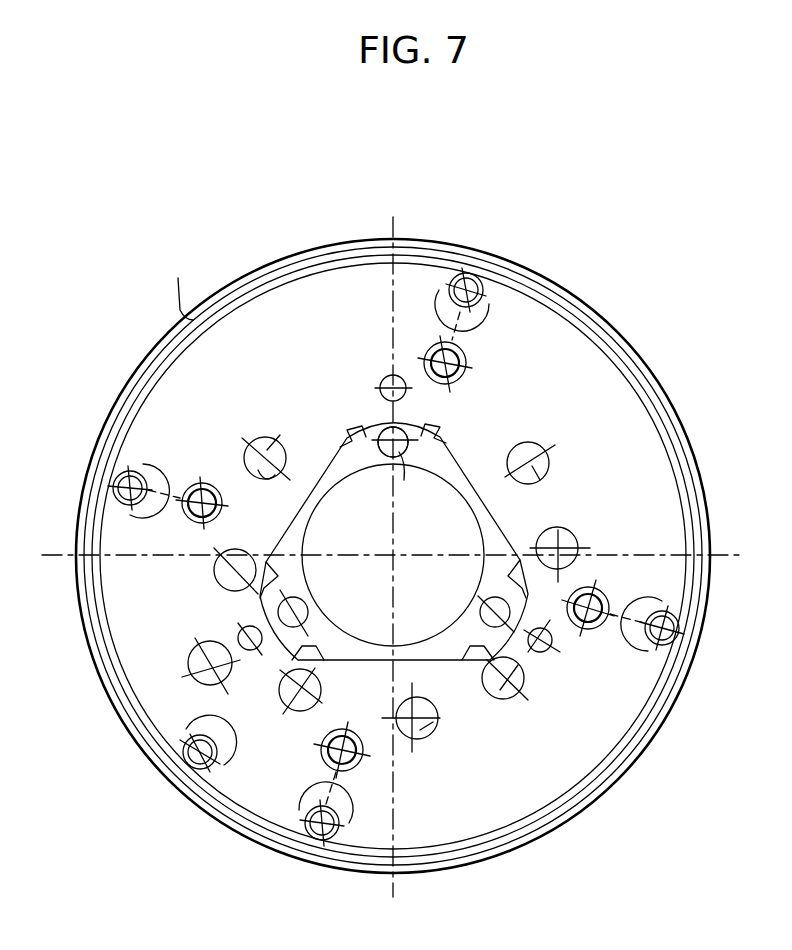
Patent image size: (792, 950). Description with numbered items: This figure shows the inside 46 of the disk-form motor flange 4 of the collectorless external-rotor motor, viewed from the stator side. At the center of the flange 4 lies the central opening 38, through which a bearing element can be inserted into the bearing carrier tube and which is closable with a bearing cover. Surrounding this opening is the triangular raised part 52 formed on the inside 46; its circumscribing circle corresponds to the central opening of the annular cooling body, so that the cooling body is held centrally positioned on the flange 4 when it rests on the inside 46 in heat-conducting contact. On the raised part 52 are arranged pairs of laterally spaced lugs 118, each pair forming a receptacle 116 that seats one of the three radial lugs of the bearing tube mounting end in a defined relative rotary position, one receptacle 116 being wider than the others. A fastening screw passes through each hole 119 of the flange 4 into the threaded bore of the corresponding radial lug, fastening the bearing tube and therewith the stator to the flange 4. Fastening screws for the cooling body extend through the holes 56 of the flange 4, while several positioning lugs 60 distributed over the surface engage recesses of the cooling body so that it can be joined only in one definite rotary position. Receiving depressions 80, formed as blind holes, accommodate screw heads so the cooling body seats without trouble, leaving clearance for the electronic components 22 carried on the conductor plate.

The motor flange 4 is at (262, 248).
The electronic components 22 is at (188, 665).
The central opening 38 is at (372, 546).
The inside 46 is at (270, 379).
The raised part 52 is at (455, 470).
The holes 56 is at (392, 377).
The positioning lugs 60 is at (473, 362).
The receiving depressions 80 is at (272, 482).
The receptacle 116 is at (362, 400).
The lugs 118 is at (342, 442).
The hole 119 is at (296, 611).